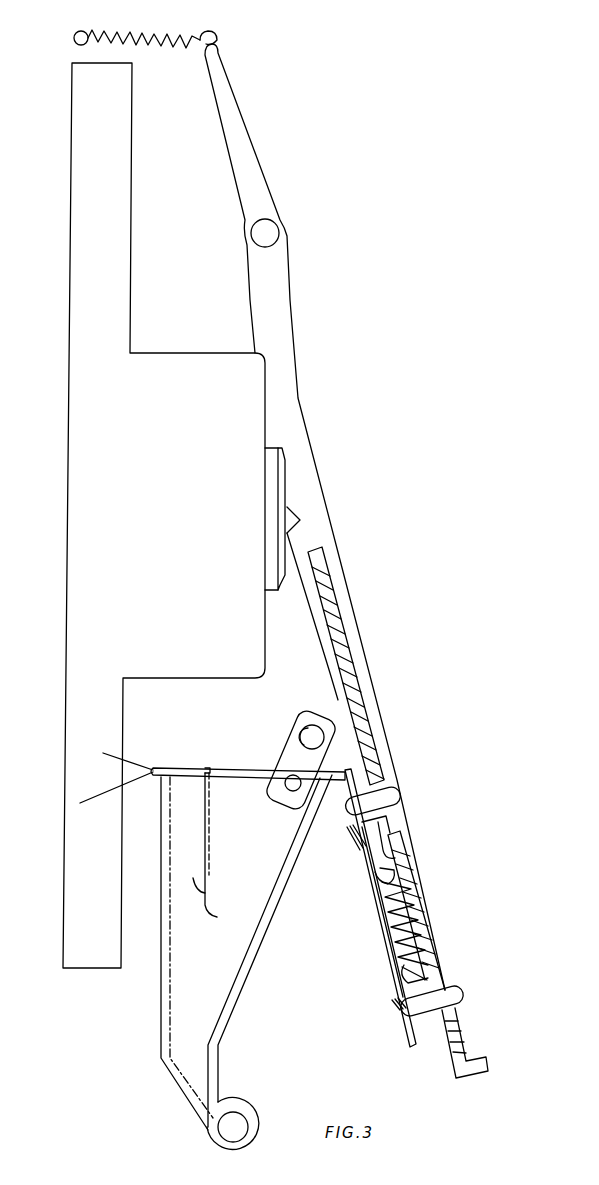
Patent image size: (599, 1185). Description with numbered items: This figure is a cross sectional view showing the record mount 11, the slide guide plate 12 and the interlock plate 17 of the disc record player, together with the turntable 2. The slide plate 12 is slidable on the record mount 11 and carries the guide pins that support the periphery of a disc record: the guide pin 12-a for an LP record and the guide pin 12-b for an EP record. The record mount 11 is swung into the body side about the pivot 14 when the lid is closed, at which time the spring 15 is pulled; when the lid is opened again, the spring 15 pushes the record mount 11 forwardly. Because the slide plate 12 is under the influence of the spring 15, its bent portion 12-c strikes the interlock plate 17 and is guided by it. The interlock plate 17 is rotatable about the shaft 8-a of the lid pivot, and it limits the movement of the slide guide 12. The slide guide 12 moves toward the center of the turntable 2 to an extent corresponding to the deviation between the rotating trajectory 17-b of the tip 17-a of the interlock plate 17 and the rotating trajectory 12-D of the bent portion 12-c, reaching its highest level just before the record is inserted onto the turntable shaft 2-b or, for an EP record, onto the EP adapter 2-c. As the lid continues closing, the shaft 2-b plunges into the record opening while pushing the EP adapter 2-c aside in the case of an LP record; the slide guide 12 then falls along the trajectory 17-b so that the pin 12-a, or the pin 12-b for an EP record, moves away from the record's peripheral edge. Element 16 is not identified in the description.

The turntable 2 is at (72, 181).
The turntable shaft 2-b is at (302, 521).
The EP adapter 2-c is at (282, 447).
The shaft of the pivot 8-a is at (233, 1128).
The record mount 11 is at (337, 623).
The slide guide plate 12 is at (377, 912).
The guide pin 12-a is at (465, 992).
The guide pin 12-b is at (400, 795).
The bent portion 12-c is at (298, 780).
The rotating trajectory 12-D is at (250, 776).
The pivot 14 is at (280, 222).
The spring 15 is at (160, 43).
The pivot pin 16 is at (313, 733).
The interlock plate 17 is at (247, 985).
The tip 17-a is at (346, 772).
The rotating trajectory 17-b is at (236, 768).